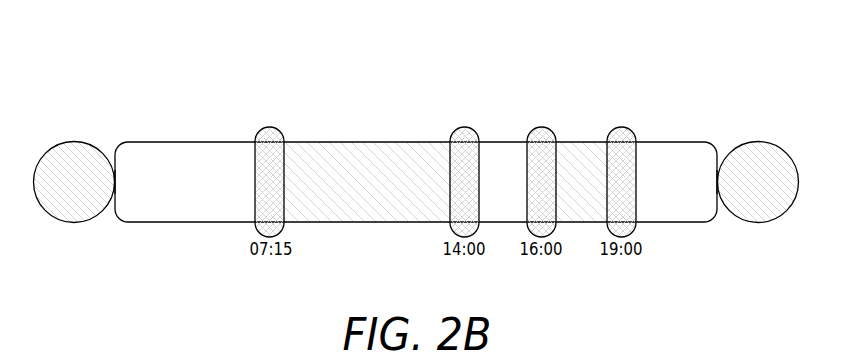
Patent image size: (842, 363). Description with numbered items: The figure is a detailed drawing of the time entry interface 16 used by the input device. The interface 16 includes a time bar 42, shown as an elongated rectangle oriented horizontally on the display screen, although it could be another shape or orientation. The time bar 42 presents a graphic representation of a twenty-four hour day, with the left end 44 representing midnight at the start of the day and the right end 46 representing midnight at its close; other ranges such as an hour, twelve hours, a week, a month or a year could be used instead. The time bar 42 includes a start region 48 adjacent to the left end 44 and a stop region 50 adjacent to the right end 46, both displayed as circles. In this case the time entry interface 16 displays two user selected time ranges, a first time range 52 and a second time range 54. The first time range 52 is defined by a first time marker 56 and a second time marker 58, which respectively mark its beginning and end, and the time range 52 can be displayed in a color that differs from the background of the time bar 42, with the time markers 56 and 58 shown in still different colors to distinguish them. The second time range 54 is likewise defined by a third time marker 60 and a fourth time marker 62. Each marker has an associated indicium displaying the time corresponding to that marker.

The time entry interface 16 is at (697, 292).
The time bar 42 is at (192, 142).
The left end 44 is at (110, 200).
The right end 46 is at (720, 197).
The start region 48 is at (72, 140).
The stop region 50 is at (757, 142).
The first time range 52 is at (368, 142).
The second time range 54 is at (583, 142).
The first time marker 56 is at (268, 127).
The second time marker 58 is at (465, 127).
The third time marker 60 is at (540, 127).
The fourth time marker 62 is at (622, 127).